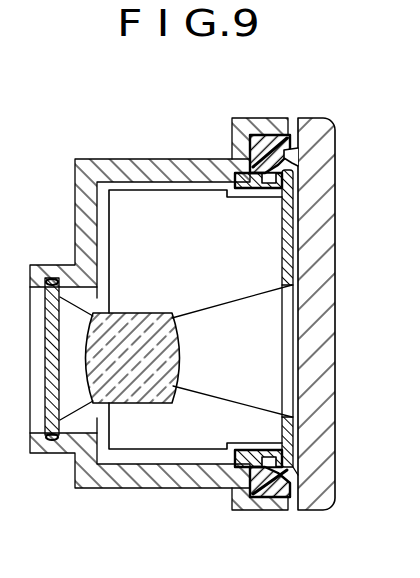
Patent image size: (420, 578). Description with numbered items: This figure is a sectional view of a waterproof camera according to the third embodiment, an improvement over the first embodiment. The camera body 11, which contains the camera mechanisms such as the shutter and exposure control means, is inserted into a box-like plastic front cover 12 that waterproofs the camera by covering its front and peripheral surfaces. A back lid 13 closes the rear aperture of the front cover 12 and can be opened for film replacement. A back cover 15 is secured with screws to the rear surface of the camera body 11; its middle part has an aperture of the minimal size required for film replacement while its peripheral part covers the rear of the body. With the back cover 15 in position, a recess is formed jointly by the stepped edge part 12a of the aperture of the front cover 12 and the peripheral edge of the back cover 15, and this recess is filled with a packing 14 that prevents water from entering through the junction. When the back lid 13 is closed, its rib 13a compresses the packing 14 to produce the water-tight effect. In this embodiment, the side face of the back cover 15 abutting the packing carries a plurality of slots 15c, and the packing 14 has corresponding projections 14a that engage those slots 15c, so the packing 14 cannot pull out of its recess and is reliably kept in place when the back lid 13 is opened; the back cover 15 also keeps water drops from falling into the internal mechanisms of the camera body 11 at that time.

The camera body 11 is at (164, 198).
The front cover 12 is at (116, 166).
The edge part of the aperture of the front cover 12a is at (256, 128).
The back lid 13 is at (327, 117).
The rib 13a is at (287, 156).
The packing 14 is at (271, 135).
The projections 14a is at (249, 152).
The back cover 15 is at (300, 218).
The slots 15c is at (277, 196).